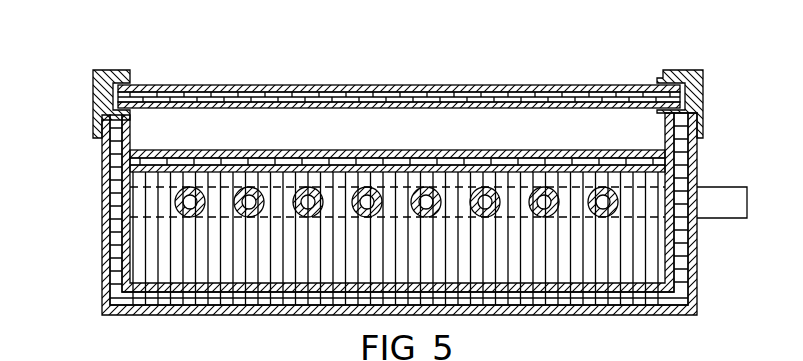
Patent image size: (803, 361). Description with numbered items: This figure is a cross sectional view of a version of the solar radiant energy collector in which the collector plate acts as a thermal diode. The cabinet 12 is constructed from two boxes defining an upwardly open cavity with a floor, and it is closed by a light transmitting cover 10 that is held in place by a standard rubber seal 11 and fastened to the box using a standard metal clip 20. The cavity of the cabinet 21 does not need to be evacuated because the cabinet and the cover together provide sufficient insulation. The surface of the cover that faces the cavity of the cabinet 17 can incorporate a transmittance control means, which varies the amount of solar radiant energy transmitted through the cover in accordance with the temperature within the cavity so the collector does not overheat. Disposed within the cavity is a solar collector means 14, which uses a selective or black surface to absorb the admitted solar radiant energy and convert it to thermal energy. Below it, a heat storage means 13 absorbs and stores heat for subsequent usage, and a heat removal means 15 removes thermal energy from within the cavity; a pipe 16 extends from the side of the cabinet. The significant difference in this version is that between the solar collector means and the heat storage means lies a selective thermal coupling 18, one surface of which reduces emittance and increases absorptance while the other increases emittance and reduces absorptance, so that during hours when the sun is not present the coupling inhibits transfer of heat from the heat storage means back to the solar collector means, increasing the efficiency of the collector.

The light transmitting cover 10 is at (288, 85).
The rubber seal 11 is at (137, 82).
The cabinet 12 is at (100, 187).
The heat storage means 13 is at (262, 236).
The solar collector means 14 is at (353, 150).
The heat removal means 15 is at (177, 207).
The outlet pipe 16 is at (715, 220).
The cavity-facing cover surface 17 is at (570, 110).
The selective thermal coupling 18 is at (238, 157).
The metal clip 20 is at (703, 93).
The cavity of the cabinet 21 is at (490, 130).